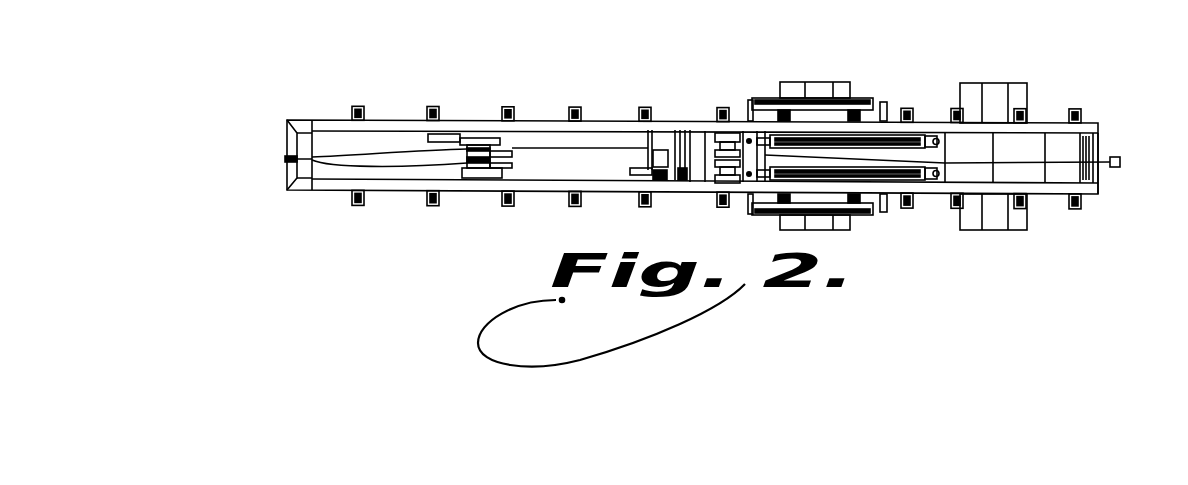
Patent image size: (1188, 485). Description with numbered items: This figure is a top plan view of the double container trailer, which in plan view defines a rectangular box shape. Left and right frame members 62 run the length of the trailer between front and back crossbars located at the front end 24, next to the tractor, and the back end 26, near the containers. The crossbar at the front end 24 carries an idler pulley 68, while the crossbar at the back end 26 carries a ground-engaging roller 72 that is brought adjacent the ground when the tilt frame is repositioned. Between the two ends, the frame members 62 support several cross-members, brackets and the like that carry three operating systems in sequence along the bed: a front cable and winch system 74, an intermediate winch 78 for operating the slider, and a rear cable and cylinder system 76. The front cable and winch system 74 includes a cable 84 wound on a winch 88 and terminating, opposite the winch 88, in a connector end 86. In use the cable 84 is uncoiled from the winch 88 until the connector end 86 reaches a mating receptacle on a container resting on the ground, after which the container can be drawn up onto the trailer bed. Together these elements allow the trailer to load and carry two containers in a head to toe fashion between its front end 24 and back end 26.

The front end 24 is at (288, 172).
The back end 26 is at (1098, 191).
The left and right frame members 62 is at (600, 126).
The idler pulley 68 is at (288, 158).
The ground-engaging roller 72 is at (1093, 146).
The front cable and winch system 74 is at (486, 147).
The rear cable and cylinder system 76 is at (870, 140).
The intermediate winch 78 is at (664, 178).
The cable 84 is at (705, 150).
The connector end 86 is at (1121, 162).
The winch 88 is at (510, 159).